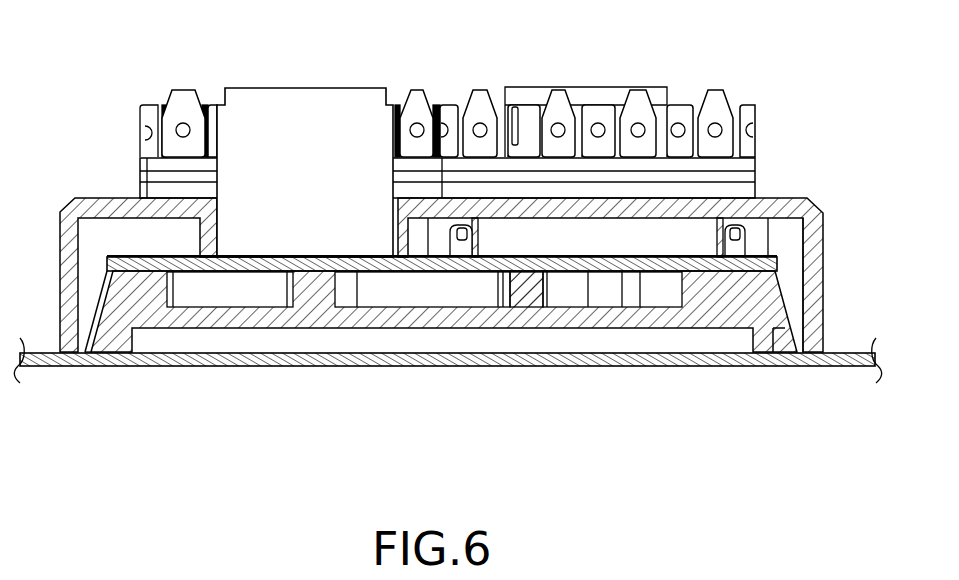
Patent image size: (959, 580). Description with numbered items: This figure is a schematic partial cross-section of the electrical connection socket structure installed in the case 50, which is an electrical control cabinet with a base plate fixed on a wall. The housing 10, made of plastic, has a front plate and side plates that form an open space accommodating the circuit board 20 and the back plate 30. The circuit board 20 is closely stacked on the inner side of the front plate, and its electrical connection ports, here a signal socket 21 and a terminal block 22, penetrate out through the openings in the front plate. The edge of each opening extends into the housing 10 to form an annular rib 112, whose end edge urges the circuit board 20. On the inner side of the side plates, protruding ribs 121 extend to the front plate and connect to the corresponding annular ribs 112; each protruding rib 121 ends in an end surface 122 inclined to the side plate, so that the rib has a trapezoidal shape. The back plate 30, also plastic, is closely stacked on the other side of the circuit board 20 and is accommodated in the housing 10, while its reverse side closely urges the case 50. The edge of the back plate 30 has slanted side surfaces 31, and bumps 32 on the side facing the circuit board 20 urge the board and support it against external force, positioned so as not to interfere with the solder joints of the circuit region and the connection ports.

The housing 10 is at (68, 208).
The annular rib 112 is at (472, 242).
The protruding rib 121 is at (792, 282).
The end surface 122 is at (787, 312).
The circuit board 20 is at (757, 257).
The signal socket 21 is at (312, 110).
The terminal block 22 is at (675, 163).
The back plate 30 is at (712, 328).
The slanted side surface 31 is at (780, 353).
The bump 32 is at (537, 289).
The case 50 is at (277, 354).